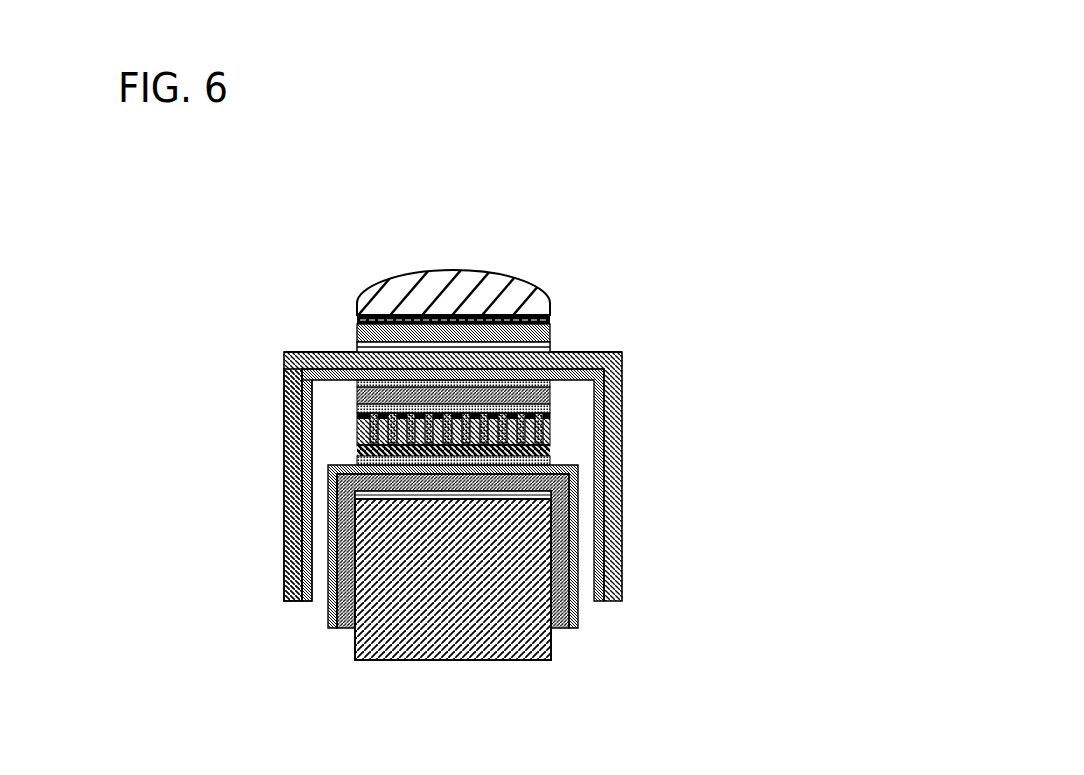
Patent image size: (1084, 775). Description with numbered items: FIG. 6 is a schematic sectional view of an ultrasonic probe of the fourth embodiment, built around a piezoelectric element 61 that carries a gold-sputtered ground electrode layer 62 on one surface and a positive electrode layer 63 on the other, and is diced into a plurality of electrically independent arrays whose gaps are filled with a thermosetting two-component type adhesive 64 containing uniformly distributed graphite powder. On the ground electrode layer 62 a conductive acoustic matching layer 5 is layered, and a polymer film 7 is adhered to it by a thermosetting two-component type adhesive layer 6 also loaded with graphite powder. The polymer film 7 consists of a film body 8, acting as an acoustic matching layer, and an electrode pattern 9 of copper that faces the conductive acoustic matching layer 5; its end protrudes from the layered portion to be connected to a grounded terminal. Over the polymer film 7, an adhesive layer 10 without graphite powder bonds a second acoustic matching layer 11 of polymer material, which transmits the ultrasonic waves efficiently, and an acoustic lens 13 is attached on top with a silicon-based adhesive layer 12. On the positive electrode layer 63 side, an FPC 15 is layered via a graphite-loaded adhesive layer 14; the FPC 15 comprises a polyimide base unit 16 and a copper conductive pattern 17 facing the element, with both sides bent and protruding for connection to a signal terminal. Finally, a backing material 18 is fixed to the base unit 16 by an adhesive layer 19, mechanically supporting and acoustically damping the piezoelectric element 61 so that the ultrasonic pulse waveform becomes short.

The conductive acoustic matching layer 5 is at (302, 369).
The adhesive layer 6 is at (300, 352).
The polymer film 7 is at (193, 485).
The film body 8 is at (293, 447).
The electrode pattern 9 is at (306, 474).
The adhesive layer 10 is at (550, 348).
The second acoustic matching layer 11 is at (550, 335).
The silicon-based adhesive layer 12 is at (550, 320).
The acoustic lens 13 is at (533, 290).
The adhesive layer 14 is at (550, 460).
The FPC 15 is at (579, 546).
The base unit 16 is at (560, 528).
The conductive pattern 17 is at (570, 547).
The backing material 18 is at (377, 598).
The adhesive layer 19 is at (362, 495).
The piezoelectric element 61 is at (550, 432).
The ground electrode layer 62 is at (550, 417).
The positive electrode layer 63 is at (550, 447).
The thermosetting two-component type adhesive 64 is at (357, 408).